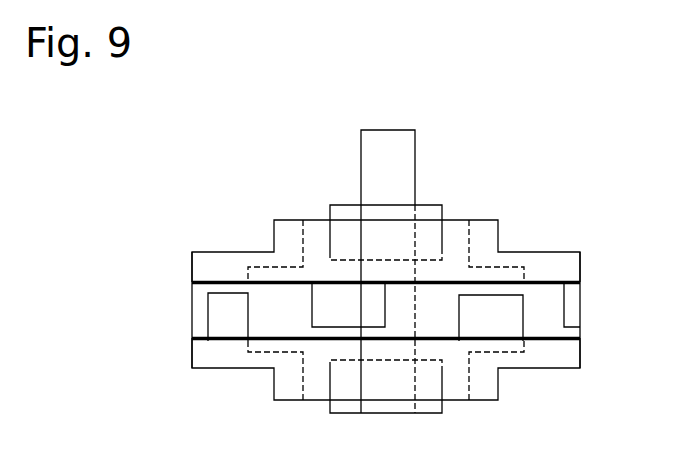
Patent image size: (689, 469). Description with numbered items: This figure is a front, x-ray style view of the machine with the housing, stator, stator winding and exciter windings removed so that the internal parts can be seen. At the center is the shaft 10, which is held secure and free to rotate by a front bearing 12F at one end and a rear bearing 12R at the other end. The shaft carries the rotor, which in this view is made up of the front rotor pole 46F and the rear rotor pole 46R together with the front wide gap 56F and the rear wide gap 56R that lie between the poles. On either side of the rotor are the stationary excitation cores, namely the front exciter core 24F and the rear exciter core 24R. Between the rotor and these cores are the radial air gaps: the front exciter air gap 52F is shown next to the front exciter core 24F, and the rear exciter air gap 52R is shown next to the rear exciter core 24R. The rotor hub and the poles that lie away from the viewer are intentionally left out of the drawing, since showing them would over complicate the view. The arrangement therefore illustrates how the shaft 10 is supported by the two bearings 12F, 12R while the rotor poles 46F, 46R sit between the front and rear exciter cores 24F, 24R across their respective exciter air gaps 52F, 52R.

The shaft 10 is at (396, 167).
The front bearing 12F is at (427, 237).
The rear bearing 12R is at (348, 382).
The front exciter core 24F is at (540, 268).
The rear exciter core 24R is at (563, 368).
The front rotor pole 46F is at (343, 307).
The rear rotor pole 46R is at (485, 313).
The front exciter air gap 52F is at (280, 281).
The rear exciter air gap 52R is at (280, 340).
The front wide gap 56F is at (487, 288).
The rear wide gap 56R is at (340, 335).